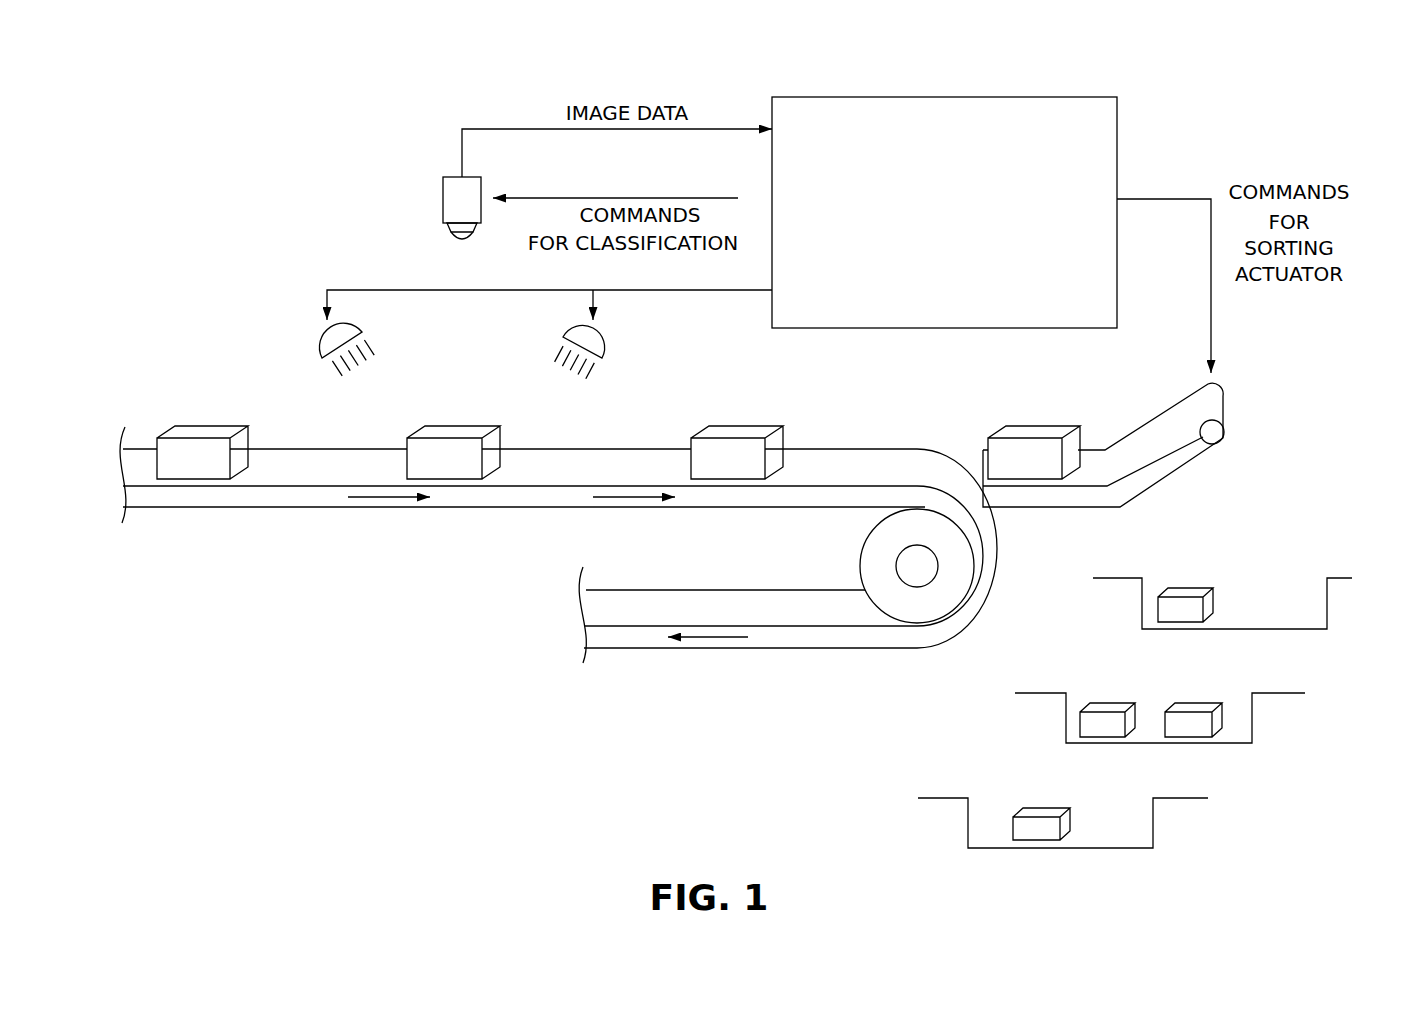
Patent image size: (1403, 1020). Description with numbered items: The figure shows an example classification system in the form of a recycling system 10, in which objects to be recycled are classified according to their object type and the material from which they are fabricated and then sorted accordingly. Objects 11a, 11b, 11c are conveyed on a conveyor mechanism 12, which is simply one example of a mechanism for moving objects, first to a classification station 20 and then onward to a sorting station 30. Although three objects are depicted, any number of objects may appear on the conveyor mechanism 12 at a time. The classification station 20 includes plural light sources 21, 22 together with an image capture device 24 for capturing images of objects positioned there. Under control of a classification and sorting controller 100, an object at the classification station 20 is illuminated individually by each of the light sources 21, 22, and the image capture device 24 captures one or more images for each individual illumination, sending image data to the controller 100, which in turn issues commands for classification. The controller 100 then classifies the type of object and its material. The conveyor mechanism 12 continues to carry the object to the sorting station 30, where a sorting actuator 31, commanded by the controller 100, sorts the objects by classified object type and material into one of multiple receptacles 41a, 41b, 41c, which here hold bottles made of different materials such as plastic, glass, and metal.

The recycling system 10 is at (252, 155).
The classification and sorting controller 100 is at (985, 97).
The image capture device 24 is at (443, 187).
The light source 21 is at (320, 341).
The light source 22 is at (602, 343).
The object 11a is at (199, 431).
The object 11b is at (450, 431).
The object 11c is at (733, 431).
The conveyor mechanism 12 is at (260, 498).
The classification station 20 is at (440, 515).
The sorting actuator 31 is at (1155, 470).
The sorting station 30 is at (1232, 463).
The receptacle 41a is at (1327, 600).
The receptacle 41b is at (1252, 717).
The receptacle 41c is at (1153, 823).